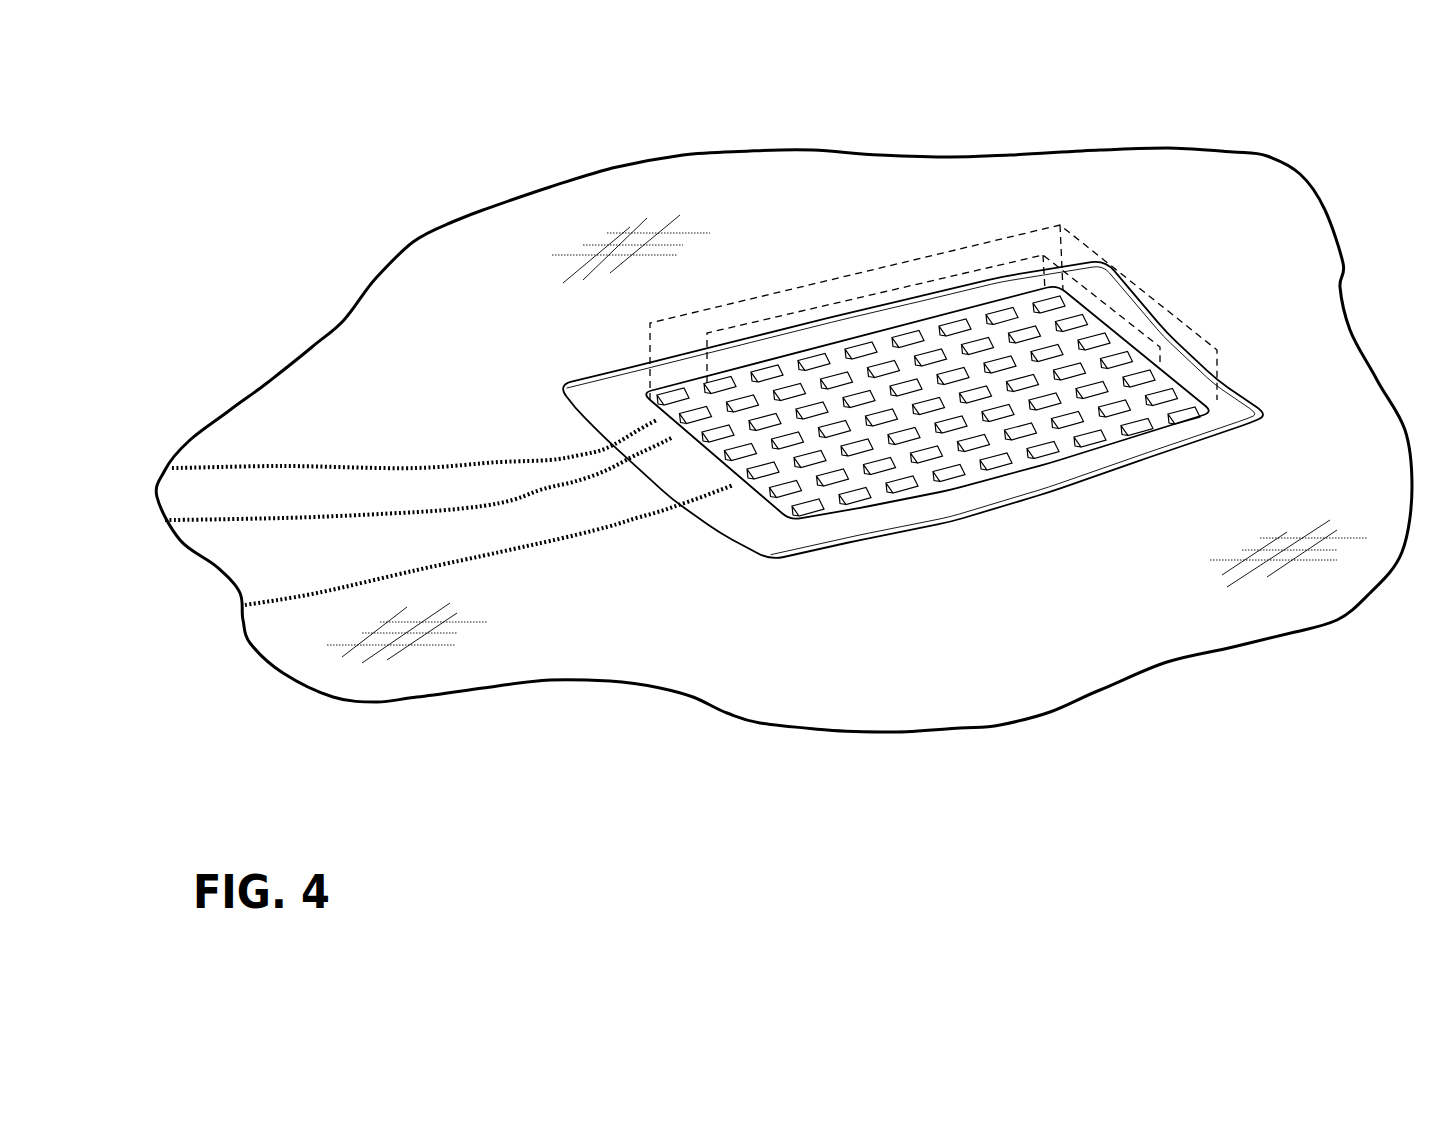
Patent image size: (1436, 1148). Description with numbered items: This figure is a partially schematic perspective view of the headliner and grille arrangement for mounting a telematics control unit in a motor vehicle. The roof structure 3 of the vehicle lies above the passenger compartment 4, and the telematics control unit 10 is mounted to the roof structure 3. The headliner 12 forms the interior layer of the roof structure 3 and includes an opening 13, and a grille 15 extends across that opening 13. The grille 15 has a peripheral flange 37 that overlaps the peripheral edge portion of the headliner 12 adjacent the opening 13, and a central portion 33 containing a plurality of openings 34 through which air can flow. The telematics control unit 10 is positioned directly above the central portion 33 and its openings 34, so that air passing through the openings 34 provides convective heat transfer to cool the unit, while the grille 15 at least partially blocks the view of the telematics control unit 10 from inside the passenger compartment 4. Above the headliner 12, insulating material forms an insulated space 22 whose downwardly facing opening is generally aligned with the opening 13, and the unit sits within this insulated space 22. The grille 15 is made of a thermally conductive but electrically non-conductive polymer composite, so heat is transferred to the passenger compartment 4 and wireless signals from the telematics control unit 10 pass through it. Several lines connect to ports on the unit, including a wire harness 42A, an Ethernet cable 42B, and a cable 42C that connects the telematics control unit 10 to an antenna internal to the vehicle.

The roof structure 3 is at (460, 270).
The passenger compartment 4 is at (1129, 606).
The telematics control unit 10 is at (799, 272).
The headliner 12 is at (847, 212).
The opening 13 is at (1075, 480).
The grille 15 is at (734, 561).
The insulated space 22 is at (1133, 281).
The central portion 33 is at (903, 487).
The openings 34 is at (832, 478).
The peripheral flange 37 is at (725, 508).
The wire harness 42A is at (297, 457).
The Ethernet cable 42B is at (265, 520).
The cable 42C is at (300, 613).